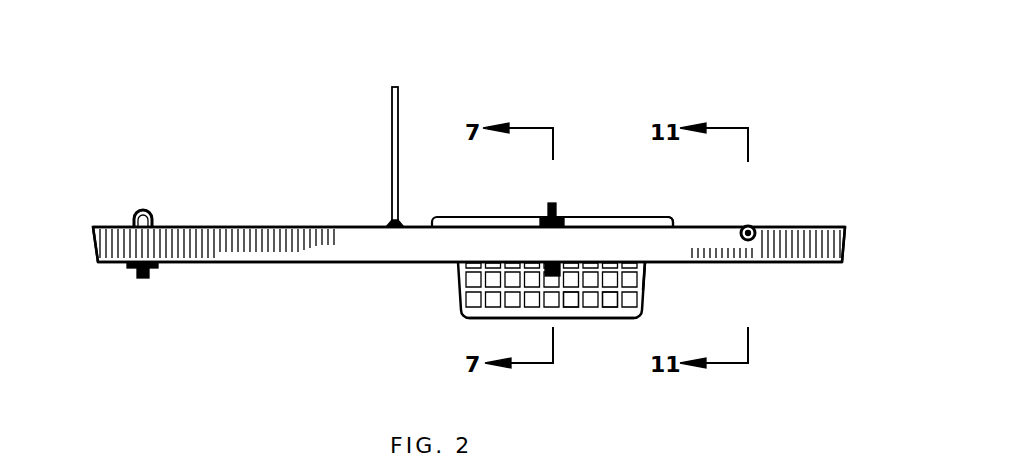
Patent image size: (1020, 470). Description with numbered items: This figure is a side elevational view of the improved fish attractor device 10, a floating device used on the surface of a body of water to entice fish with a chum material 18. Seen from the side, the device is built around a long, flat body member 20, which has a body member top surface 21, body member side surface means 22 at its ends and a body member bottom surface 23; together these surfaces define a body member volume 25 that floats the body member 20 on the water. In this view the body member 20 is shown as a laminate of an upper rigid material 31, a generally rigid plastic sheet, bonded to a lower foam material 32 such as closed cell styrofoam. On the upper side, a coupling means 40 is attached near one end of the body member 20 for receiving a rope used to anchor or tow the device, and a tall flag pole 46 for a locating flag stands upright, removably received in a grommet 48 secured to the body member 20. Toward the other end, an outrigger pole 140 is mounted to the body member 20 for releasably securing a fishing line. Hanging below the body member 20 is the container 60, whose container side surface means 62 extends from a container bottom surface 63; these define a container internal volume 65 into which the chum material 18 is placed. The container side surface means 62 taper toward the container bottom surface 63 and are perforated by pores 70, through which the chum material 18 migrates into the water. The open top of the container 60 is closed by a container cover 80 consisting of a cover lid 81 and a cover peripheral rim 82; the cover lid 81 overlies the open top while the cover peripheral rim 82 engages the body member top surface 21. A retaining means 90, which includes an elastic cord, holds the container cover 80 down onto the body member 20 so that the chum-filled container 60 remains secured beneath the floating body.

The fish attractor device 10 is at (578, 126).
The chum material 18 is at (576, 302).
The body member 20 is at (312, 230).
The body member top surface 21 is at (225, 226).
The body member side surface means 22 is at (93, 246).
The body member bottom surface 23 is at (215, 264).
The body member volume 25 is at (786, 240).
The upper rigid material 31 is at (840, 226).
The lower foam material 32 is at (843, 264).
The coupling means 40 is at (141, 212).
The flag pole 46 is at (400, 110).
The grommet 48 is at (403, 226).
The container 60 is at (595, 324).
The container side surface means 62 is at (650, 268).
The container bottom surface 63 is at (490, 320).
The container internal volume 65 is at (490, 283).
The pores 70 is at (616, 300).
The container cover 80 is at (636, 218).
The cover lid 81 is at (585, 218).
The cover peripheral rim 82 is at (673, 222).
The retaining means 90 is at (546, 194).
The outrigger pole 140 is at (749, 226).